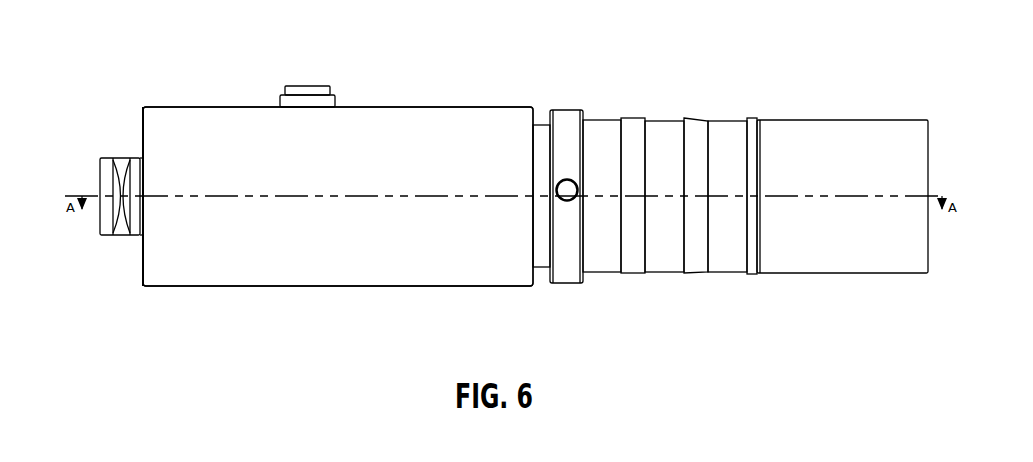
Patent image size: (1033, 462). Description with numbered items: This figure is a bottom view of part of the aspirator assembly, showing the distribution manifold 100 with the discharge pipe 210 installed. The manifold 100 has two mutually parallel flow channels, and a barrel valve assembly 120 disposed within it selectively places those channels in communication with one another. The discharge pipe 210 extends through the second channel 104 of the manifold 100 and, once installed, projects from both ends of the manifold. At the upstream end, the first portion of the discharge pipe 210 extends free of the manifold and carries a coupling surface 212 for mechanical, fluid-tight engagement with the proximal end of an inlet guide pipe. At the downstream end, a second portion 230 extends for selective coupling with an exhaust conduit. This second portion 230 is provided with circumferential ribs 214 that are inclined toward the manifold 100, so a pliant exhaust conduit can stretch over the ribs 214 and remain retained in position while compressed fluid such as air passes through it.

The distribution manifold 100 is at (216, 105).
The second flow channel 104 is at (449, 128).
The barrel valve assembly 120 is at (308, 92).
The coupling surface 212 is at (110, 163).
The circumferential ribs 214 is at (631, 120).
The discharge pipe 210 is at (714, 117).
The second portion 230 is at (817, 142).